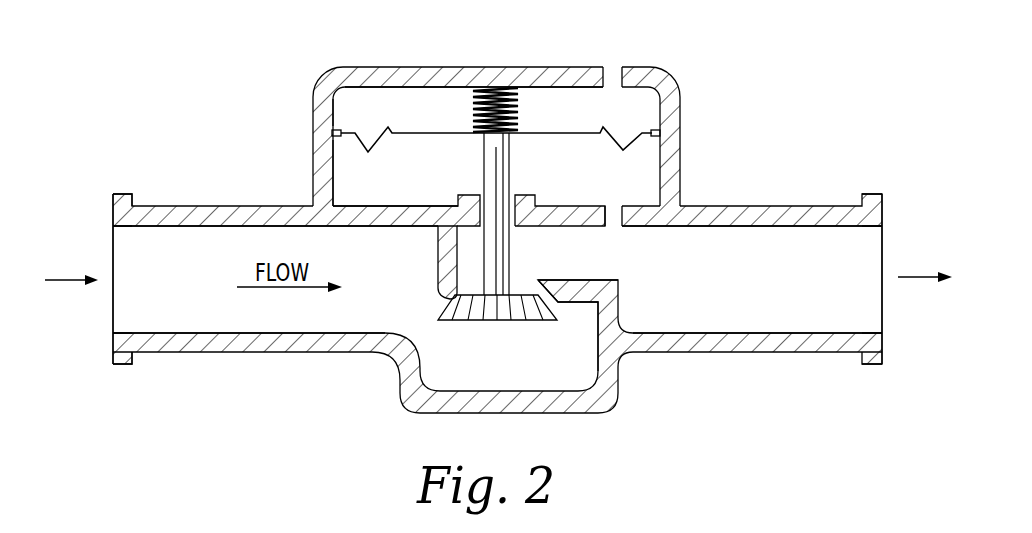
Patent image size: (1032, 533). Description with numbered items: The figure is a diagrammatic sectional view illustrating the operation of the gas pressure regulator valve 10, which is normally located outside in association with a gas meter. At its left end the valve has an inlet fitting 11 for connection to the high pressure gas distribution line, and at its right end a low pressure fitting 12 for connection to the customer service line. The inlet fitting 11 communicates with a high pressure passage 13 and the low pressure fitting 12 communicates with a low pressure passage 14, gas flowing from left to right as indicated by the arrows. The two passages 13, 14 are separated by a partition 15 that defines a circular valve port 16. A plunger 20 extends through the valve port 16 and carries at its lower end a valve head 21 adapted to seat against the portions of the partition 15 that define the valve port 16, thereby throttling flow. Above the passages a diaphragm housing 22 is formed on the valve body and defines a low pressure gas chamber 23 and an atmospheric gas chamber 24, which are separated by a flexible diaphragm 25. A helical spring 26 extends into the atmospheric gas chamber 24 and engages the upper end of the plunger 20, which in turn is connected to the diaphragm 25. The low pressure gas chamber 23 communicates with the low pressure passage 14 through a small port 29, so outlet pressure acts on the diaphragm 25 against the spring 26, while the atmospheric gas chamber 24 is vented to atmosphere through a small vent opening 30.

The flow control valve 10 is at (726, 44).
The inlet fitting 11 is at (113, 258).
The low pressure fitting 12 is at (883, 250).
The high pressure passage 13 is at (195, 293).
The low pressure passage 14 is at (803, 288).
The partition 15 is at (573, 303).
The valve port 16 is at (441, 318).
The plunger 20 is at (497, 270).
The valve head 21 is at (477, 313).
The diaphragm housing 22 is at (680, 142).
The low pressure gas chamber 23 is at (360, 175).
The atmospheric gas chamber 24 is at (363, 110).
The flexible diaphragm 25 is at (438, 132).
The helical spring 26 is at (524, 112).
The small port 29 is at (613, 213).
The vent opening 30 is at (612, 77).